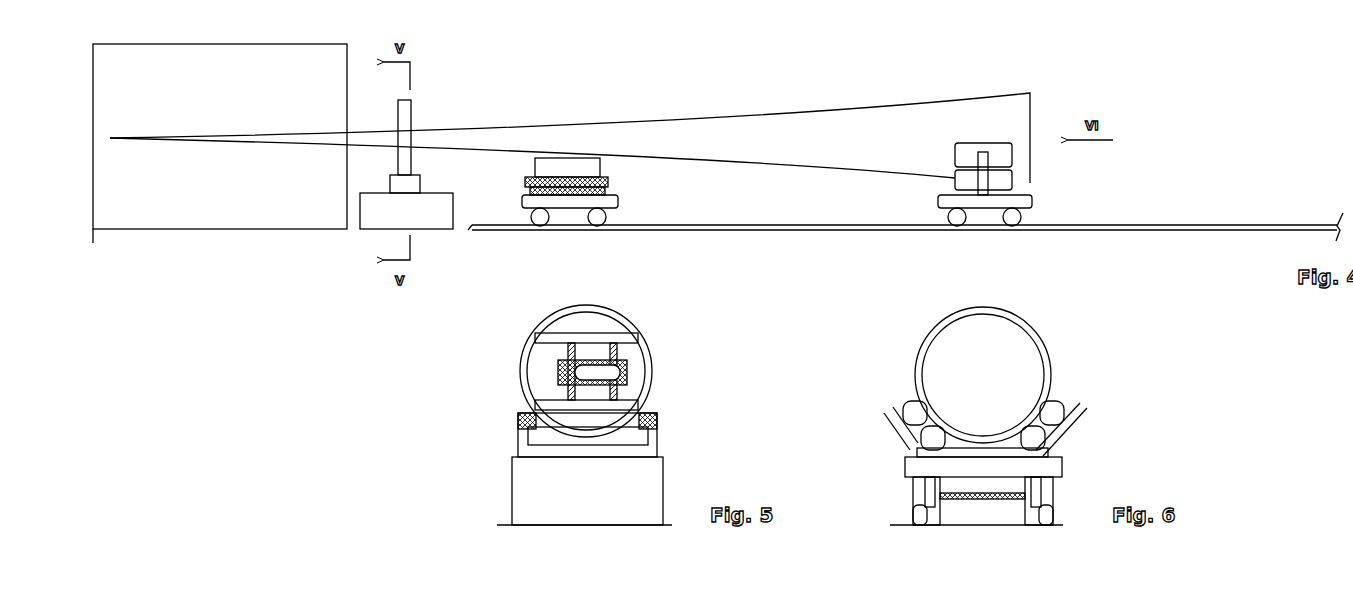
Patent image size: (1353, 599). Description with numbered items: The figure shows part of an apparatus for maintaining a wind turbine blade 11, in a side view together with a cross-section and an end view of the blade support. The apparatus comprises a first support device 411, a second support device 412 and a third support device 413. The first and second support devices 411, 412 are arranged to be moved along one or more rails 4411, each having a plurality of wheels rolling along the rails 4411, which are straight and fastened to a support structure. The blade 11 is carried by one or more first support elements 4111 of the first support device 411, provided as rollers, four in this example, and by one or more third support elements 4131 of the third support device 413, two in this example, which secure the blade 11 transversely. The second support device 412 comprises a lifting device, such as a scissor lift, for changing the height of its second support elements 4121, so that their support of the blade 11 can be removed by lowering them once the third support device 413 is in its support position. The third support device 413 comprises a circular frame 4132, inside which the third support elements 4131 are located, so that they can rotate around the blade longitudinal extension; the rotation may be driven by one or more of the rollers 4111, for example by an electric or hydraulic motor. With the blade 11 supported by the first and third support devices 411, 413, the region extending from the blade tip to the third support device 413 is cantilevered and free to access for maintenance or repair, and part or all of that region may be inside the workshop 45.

In FIG. 4, the blade 11 is at (708, 120).
In FIG. 5, the blade 11 is at (622, 372).
In FIG. 6, the blade 11 is at (913, 360).
In FIG. 4, the workshop 45 is at (349, 104).
In FIG. 4, the first support device 411 is at (938, 203).
In FIG. 6, the first support device 411 is at (905, 468).
In FIG. 4, the first support elements 4111 is at (1014, 178).
In FIG. 6, the first support elements 4111 is at (903, 451).
In FIG. 4, the second support device 412 is at (522, 204).
In FIG. 4, the second support elements 4121 is at (602, 166).
In FIG. 4, the third support device 413 is at (389, 190).
In FIG. 5, the third support device 413 is at (512, 468).
In FIG. 4, the third support elements 4131 is at (420, 121).
In FIG. 5, the third support elements 4131 is at (556, 385).
In FIG. 5, the circular frame 4132 is at (545, 322).
In FIG. 4, the rails 4411 is at (690, 225).
In FIG. 6, the rails 4411 is at (913, 510).